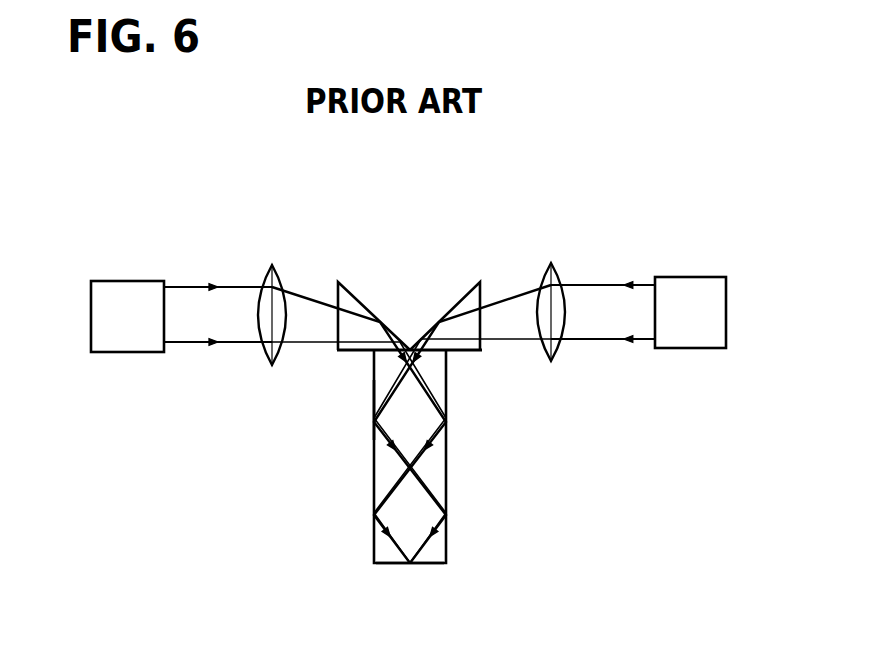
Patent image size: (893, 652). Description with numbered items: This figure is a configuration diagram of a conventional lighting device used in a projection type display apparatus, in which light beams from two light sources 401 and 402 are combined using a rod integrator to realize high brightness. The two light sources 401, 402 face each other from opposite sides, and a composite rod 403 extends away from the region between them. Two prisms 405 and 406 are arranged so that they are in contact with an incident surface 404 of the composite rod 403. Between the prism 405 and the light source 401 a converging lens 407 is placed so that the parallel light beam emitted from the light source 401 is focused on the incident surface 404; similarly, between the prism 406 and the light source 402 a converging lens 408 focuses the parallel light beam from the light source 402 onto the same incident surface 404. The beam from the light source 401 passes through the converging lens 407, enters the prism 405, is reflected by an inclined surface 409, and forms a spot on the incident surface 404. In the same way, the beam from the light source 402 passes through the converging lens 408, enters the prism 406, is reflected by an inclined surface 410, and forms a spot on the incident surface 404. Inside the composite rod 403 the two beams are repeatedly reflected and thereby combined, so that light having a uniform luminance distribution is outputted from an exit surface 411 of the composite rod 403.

The light source 401 is at (133, 338).
The light source 402 is at (697, 337).
The composite rod 403 is at (447, 447).
The incident surface 404 is at (374, 405).
The prism 405 is at (327, 260).
The prism 406 is at (485, 266).
The converging lens 407 is at (277, 293).
The converging lens 408 is at (547, 280).
The inclined surface 409 is at (362, 282).
The inclined surface 410 is at (460, 284).
The exit surface 411 is at (437, 550).